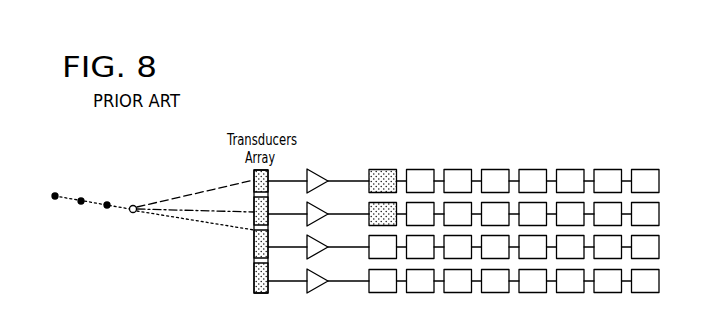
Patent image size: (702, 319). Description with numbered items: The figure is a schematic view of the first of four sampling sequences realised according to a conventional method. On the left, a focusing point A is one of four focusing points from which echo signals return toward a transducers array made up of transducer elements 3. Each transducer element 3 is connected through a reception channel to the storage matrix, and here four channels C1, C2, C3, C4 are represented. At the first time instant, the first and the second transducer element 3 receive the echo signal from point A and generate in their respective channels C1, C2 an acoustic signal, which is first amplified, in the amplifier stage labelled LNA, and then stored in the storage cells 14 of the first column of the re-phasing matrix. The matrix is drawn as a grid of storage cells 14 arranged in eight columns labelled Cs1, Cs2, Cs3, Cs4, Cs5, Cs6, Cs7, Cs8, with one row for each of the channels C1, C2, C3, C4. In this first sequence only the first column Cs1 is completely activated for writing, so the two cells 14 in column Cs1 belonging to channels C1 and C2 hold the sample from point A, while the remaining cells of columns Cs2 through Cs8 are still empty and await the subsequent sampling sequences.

The transducer element 3 is at (254, 281).
The storage cell 14 is at (407, 203).
The focusing point A is at (96, 195).
The channel C1 is at (318, 171).
The channel C2 is at (318, 204).
The channel C3 is at (318, 237).
The channel C4 is at (318, 271).
The low noise amplifiers LNA is at (313, 244).
The storage cell column 1 Cs1 is at (383, 221).
The storage cell column 2 Cs2 is at (421, 221).
The storage cell column 3 Cs3 is at (458, 221).
The storage cell column 4 Cs4 is at (496, 221).
The storage cell column 5 Cs5 is at (533, 221).
The storage cell column 6 Cs6 is at (571, 221).
The storage cell column 7 Cs7 is at (608, 221).
The storage cell column 8 Cs8 is at (646, 221).